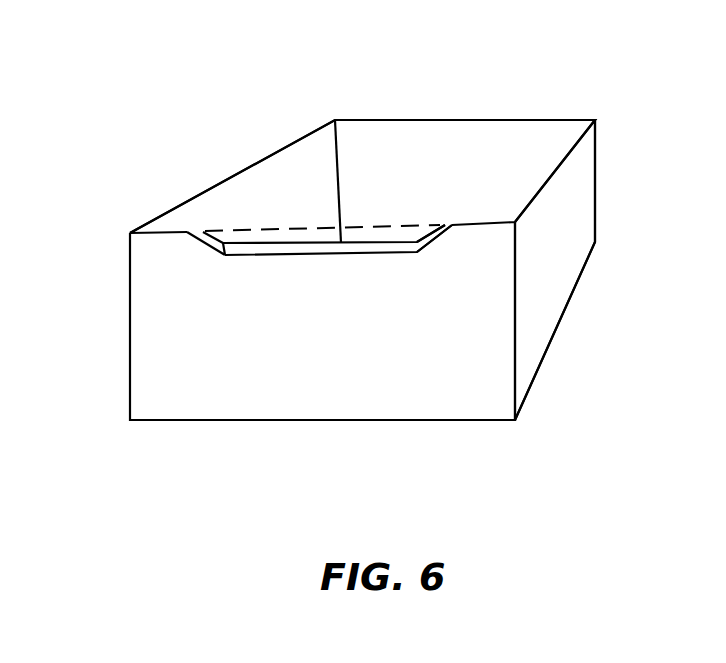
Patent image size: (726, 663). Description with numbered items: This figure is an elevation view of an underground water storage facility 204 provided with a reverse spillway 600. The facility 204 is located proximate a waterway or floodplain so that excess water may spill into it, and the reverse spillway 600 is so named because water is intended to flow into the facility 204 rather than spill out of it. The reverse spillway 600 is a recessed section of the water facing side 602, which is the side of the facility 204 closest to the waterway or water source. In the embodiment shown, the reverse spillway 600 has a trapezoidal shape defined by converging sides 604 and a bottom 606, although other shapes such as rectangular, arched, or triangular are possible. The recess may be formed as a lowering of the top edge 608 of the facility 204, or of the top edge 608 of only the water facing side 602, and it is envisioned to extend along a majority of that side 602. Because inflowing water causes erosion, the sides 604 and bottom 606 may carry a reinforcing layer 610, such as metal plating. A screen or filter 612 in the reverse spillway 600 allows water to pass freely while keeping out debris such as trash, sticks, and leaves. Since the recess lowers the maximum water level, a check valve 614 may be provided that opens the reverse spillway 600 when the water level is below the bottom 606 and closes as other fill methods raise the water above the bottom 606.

The reverse spillway 600 is at (247, 255).
The water facing side 602 is at (430, 392).
The converging sides 604 is at (205, 233).
The bottom 606 is at (363, 243).
The top edge 608 is at (448, 225).
The reinforcing layer 610 is at (210, 253).
The screen or filter 612 is at (248, 228).
The check valve 614 is at (447, 225).
The underground water storage facility 204 is at (651, 98).